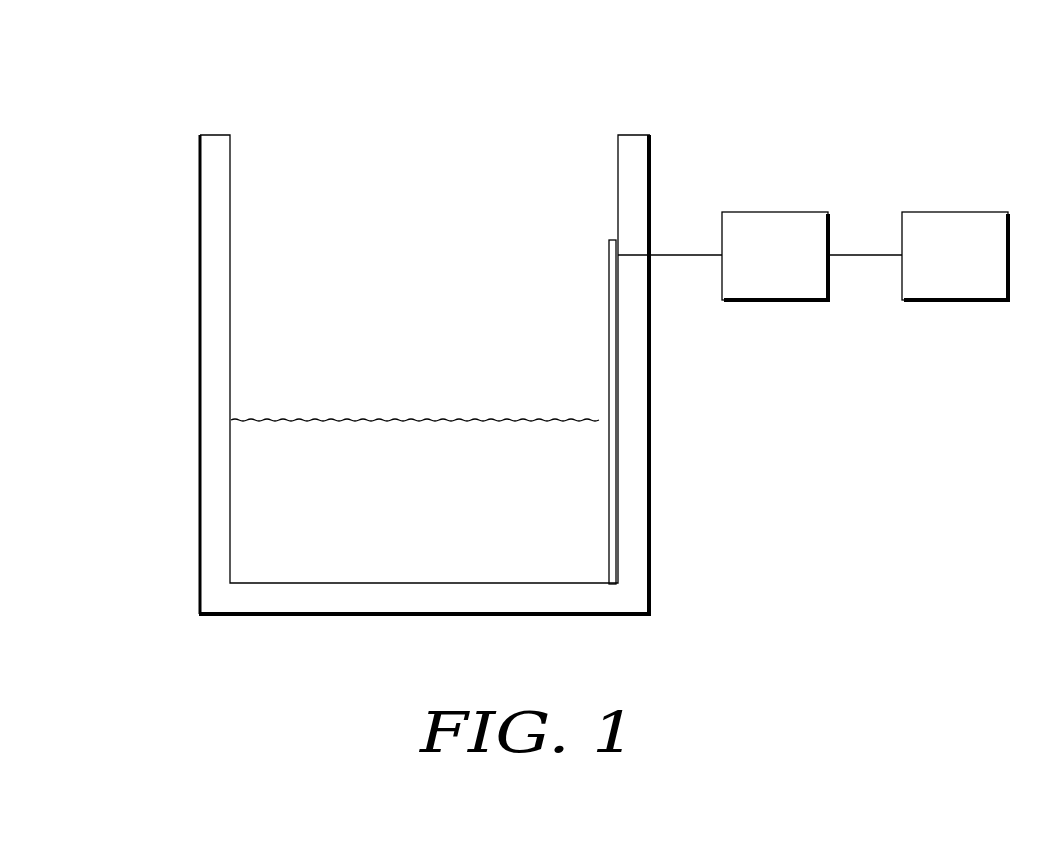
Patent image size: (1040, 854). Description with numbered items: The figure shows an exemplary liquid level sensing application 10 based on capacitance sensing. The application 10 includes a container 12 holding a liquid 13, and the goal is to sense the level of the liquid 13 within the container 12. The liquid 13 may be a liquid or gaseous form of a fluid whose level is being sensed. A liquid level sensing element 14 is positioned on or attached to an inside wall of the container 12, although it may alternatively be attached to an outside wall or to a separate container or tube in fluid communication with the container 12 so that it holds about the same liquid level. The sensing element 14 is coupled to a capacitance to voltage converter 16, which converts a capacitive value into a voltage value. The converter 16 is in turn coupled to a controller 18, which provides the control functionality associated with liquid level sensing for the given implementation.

The liquid level sensing application 10 is at (159, 72).
The container 12 is at (200, 497).
The liquid 13 is at (412, 524).
The liquid level sensing element 14 is at (601, 372).
The capacitance to voltage converter 16 is at (768, 286).
The controller 18 is at (947, 286).